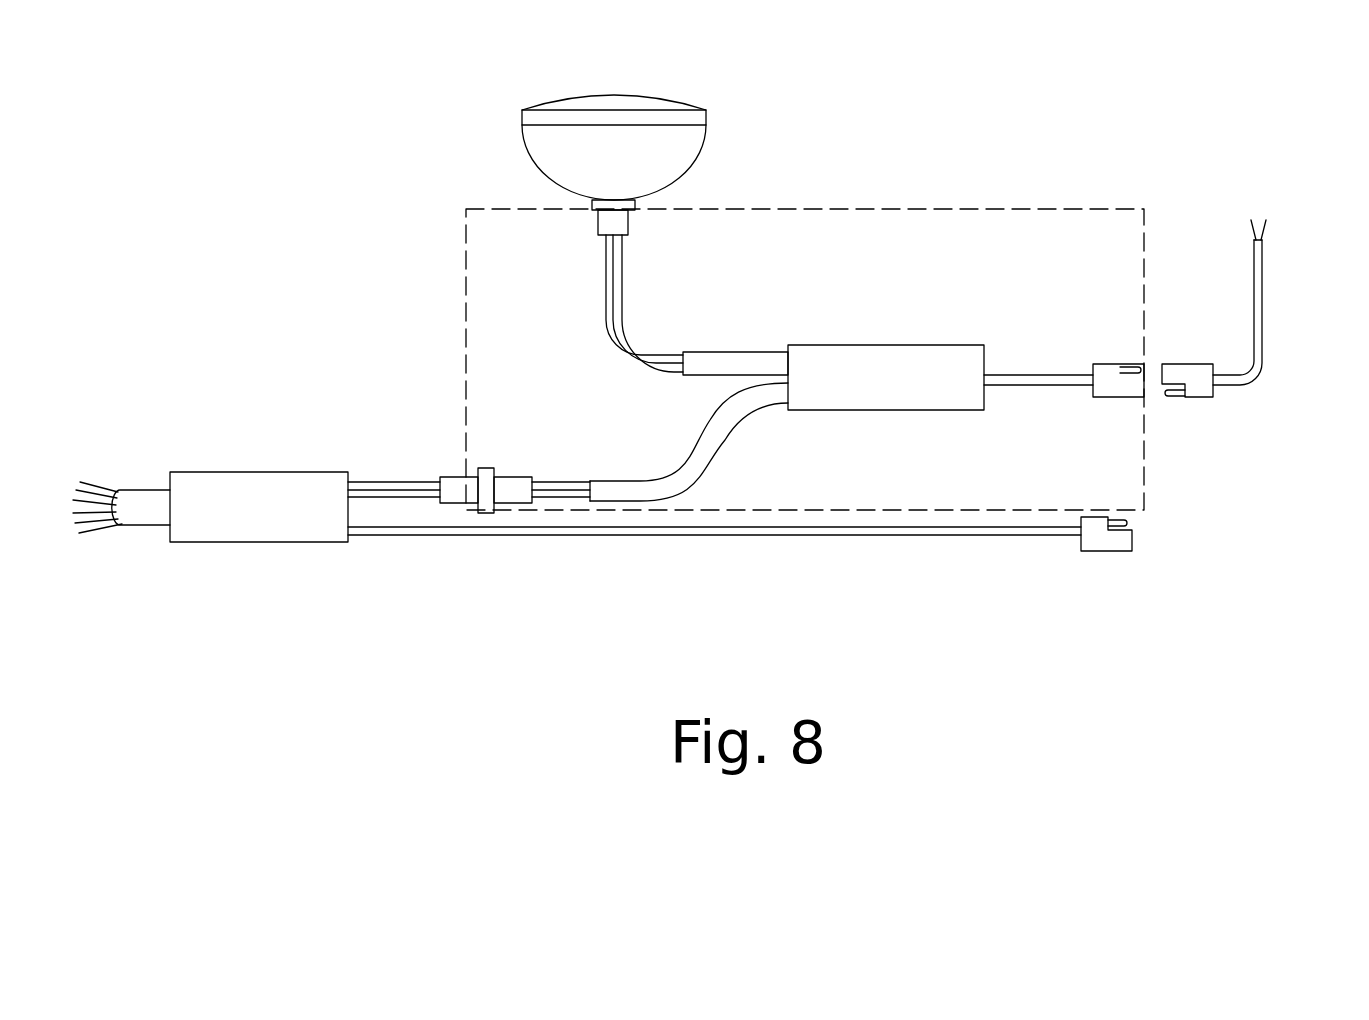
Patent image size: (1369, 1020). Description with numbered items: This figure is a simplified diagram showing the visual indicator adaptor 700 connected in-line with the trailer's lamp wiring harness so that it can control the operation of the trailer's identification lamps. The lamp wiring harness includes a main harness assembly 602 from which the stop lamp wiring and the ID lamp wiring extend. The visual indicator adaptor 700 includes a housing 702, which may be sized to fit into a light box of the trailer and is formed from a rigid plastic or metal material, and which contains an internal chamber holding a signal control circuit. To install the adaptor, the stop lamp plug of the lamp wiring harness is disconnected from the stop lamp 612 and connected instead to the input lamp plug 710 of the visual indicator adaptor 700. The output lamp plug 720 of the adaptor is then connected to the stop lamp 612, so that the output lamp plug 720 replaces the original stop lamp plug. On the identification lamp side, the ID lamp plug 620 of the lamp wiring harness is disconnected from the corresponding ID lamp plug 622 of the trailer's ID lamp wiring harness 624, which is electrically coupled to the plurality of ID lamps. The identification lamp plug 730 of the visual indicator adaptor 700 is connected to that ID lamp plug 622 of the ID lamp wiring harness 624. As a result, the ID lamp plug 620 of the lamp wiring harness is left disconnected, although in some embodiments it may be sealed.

The main harness assembly 602 is at (262, 562).
The stop lamp 612 is at (522, 127).
The ID lamp plug 620 is at (440, 476).
The ID lamp plug 622 is at (1197, 399).
The ID lamp wiring harness 624 is at (1263, 272).
The visual indicator adaptor 700 is at (958, 209).
The housing 702 is at (886, 345).
The input lamp plug 710 is at (515, 476).
The output lamp plug 720 is at (628, 222).
The identification lamp plug 730 is at (1116, 399).